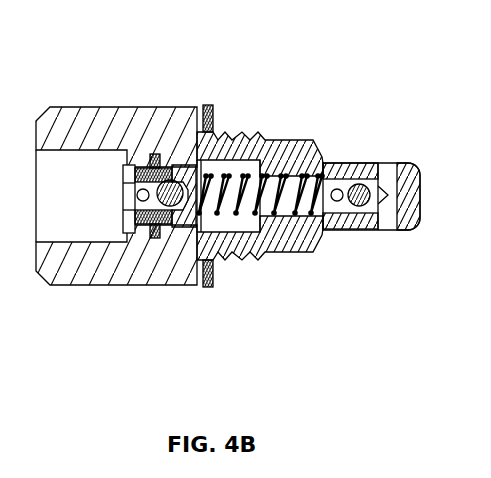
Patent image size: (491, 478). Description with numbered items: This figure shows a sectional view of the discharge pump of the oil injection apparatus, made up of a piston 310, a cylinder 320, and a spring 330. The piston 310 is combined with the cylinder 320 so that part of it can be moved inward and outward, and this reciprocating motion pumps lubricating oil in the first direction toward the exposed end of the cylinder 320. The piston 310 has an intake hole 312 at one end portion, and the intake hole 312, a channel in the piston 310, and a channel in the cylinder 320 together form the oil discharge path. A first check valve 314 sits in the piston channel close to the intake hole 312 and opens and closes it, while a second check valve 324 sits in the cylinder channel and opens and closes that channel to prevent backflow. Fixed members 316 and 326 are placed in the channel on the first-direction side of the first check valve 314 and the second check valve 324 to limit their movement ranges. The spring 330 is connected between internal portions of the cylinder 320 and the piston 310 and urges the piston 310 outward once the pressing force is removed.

The piston 310 is at (345, 163).
The intake hole 312 is at (388, 230).
The first check valve 314 is at (360, 206).
The fixed member 316 is at (336, 201).
The cylinder 320 is at (120, 130).
The second check valve 324 is at (163, 232).
The fixed member 326 is at (143, 202).
The spring 330 is at (270, 140).